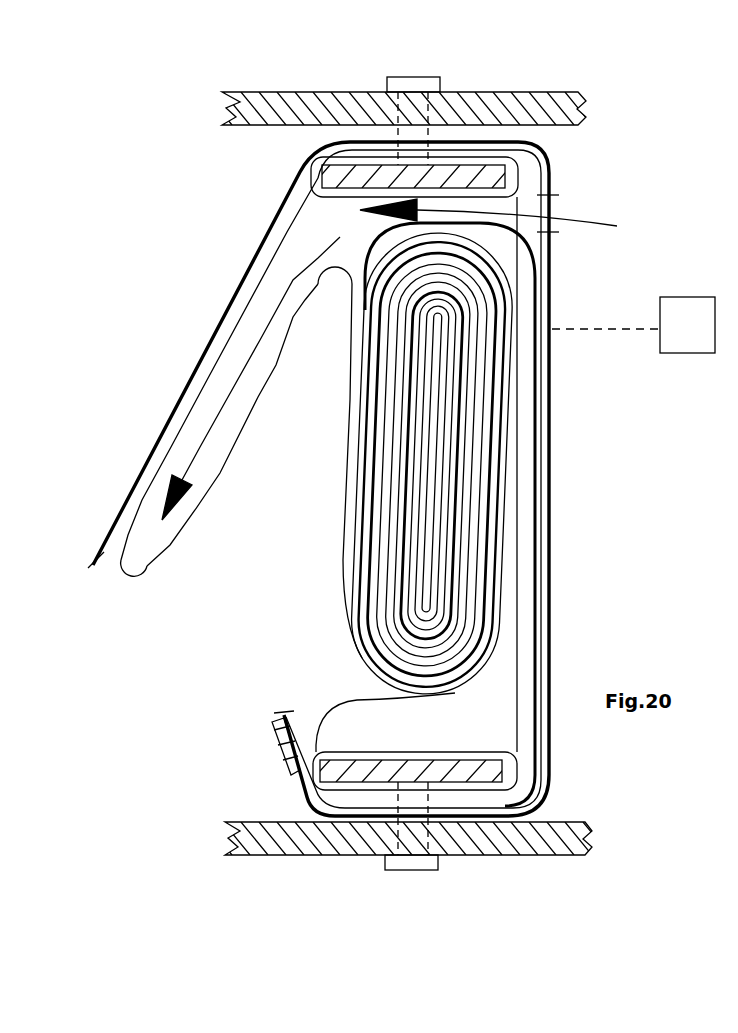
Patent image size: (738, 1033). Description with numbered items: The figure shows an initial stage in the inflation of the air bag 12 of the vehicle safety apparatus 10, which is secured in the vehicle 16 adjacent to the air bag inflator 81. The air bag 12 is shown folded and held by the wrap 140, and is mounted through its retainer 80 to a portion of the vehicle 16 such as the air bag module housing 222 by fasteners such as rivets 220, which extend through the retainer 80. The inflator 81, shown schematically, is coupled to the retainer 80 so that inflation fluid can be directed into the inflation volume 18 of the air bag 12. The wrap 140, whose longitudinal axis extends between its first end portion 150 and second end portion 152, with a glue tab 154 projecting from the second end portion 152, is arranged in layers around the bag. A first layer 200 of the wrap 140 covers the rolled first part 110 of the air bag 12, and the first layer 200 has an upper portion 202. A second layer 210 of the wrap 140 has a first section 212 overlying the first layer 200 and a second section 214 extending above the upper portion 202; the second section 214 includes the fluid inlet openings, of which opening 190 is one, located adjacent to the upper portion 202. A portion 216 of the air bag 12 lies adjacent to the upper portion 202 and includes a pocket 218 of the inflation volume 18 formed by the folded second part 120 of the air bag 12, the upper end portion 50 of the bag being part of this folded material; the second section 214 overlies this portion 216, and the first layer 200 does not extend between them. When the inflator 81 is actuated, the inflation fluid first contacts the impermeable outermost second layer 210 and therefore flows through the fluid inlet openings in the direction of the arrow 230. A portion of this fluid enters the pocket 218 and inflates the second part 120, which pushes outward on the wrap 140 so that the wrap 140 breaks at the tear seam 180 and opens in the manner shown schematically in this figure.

The vehicle safety apparatus 10 is at (160, 292).
The air bag 12 is at (394, 464).
The vehicle 16 is at (547, 90).
The inflation volume 18 is at (297, 250).
The upper end portion 50 is at (226, 468).
The retainer 80 is at (367, 175).
The air bag inflator 81 is at (686, 340).
The first part 110 is at (336, 578).
The second part 120 is at (128, 592).
The wrap 140 is at (556, 660).
The first end portion 150 is at (433, 322).
The second end portion 152 is at (298, 786).
The glue tab 154 is at (276, 742).
The tear seam 180 is at (92, 562).
The fluid inlet opening 190 is at (553, 222).
The first layer 200 is at (546, 626).
The upper portion 202 is at (535, 298).
The second layer 210 is at (556, 580).
The first section 212 is at (551, 545).
The second section 214 is at (550, 176).
The portion of the air bag 216 is at (302, 192).
The pocket 218 is at (318, 222).
The rivets 220 is at (418, 76).
The housing 222 is at (256, 97).
The arrow 230 is at (592, 221).